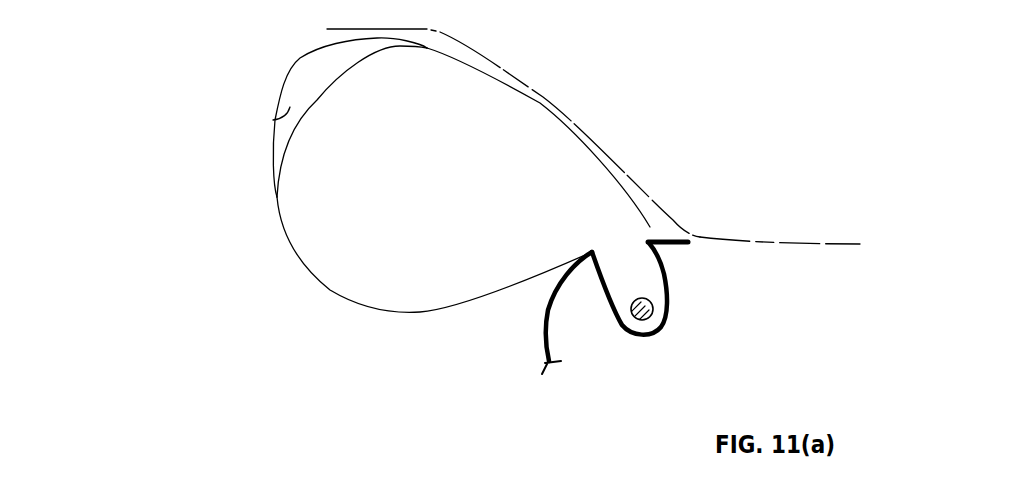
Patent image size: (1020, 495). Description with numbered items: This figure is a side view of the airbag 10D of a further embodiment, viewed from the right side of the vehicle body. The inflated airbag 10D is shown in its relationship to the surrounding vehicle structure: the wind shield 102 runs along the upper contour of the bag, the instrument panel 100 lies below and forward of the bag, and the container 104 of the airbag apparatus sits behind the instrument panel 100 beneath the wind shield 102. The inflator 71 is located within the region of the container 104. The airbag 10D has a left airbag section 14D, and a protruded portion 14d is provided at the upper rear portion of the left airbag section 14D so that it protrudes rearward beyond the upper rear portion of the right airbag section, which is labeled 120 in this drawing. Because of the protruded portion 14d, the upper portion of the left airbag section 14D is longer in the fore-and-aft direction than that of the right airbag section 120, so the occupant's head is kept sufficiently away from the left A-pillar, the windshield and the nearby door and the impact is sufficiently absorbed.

The wind shield 102 is at (583, 124).
The left airbag section 14D is at (275, 84).
The protruded portion 14d is at (273, 120).
The right airbag section 120 is at (318, 97).
The airbag 10D is at (276, 283).
The instrument panel 100 is at (540, 335).
The container of the airbag apparatus 104 is at (667, 287).
The inflator 71 is at (645, 321).